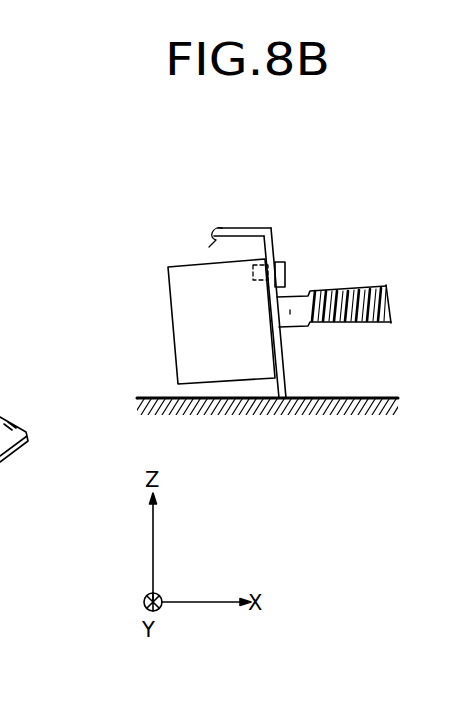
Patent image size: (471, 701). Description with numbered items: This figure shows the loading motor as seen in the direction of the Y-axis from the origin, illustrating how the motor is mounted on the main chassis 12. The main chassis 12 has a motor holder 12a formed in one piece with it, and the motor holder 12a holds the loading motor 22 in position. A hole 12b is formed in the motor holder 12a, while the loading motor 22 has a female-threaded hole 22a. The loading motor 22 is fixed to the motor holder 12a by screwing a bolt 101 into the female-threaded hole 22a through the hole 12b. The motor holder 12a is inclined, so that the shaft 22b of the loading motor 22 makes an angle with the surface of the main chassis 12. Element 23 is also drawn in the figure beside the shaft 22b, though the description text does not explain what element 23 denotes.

The main chassis 12 is at (273, 408).
The motor holder 12a is at (217, 226).
The hole 12b is at (275, 262).
The loading motor 22 is at (204, 322).
The female-threaded hole 22a is at (257, 265).
The shaft 22b is at (292, 312).
The screw 23 is at (392, 306).
The bolt 101 is at (286, 274).